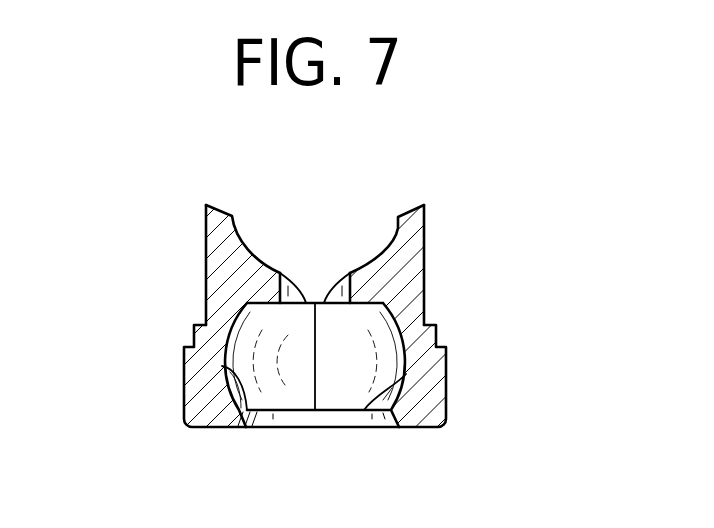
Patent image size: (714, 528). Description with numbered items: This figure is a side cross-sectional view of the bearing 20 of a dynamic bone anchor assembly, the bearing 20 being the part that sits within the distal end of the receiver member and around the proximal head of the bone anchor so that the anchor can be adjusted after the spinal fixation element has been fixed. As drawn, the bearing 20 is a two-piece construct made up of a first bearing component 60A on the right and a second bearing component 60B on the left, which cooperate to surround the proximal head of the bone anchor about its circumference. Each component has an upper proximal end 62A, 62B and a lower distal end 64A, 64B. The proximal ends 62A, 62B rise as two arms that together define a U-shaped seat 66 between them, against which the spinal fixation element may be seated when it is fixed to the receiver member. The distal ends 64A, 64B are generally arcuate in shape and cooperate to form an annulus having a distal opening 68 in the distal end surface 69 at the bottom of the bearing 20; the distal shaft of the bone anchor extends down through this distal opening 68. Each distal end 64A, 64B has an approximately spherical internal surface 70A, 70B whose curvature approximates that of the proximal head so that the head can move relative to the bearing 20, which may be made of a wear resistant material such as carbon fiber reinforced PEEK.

The bearing 20 is at (357, 327).
The first bearing component 60A is at (442, 303).
The second bearing component 60B is at (187, 325).
The proximal end 62A is at (424, 222).
The proximal end 62B is at (206, 252).
The distal end 64A is at (450, 388).
The distal end 64B is at (198, 402).
The U-shaped seat 66 is at (243, 245).
The distal opening 68 is at (283, 422).
The distal end surface 69 is at (188, 425).
The internal surface 70A is at (364, 413).
The internal surface 70B is at (247, 418).